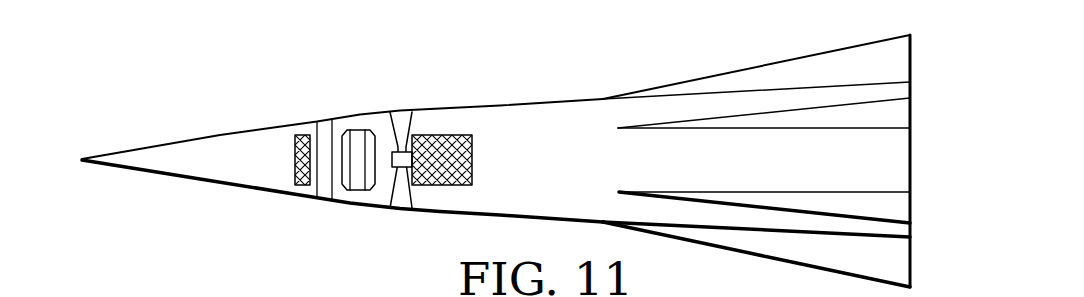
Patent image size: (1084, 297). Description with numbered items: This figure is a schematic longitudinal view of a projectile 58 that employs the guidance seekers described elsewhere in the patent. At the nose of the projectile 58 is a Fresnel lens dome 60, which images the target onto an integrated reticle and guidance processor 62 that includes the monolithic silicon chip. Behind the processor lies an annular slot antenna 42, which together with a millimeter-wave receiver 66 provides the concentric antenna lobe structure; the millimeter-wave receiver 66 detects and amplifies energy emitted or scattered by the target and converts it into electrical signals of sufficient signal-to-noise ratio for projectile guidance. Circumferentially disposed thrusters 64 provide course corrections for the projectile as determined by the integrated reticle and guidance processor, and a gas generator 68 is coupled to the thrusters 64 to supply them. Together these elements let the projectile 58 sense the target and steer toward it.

The projectile 58 is at (496, 143).
The Fresnel lens dome 60 is at (203, 137).
The integrated reticle and guidance processor 62 is at (305, 135).
The thrusters 64 is at (403, 209).
The millimeter-wave receiver 66 is at (357, 140).
The gas generator 68 is at (437, 137).
The annular slot antenna 42 is at (331, 204).